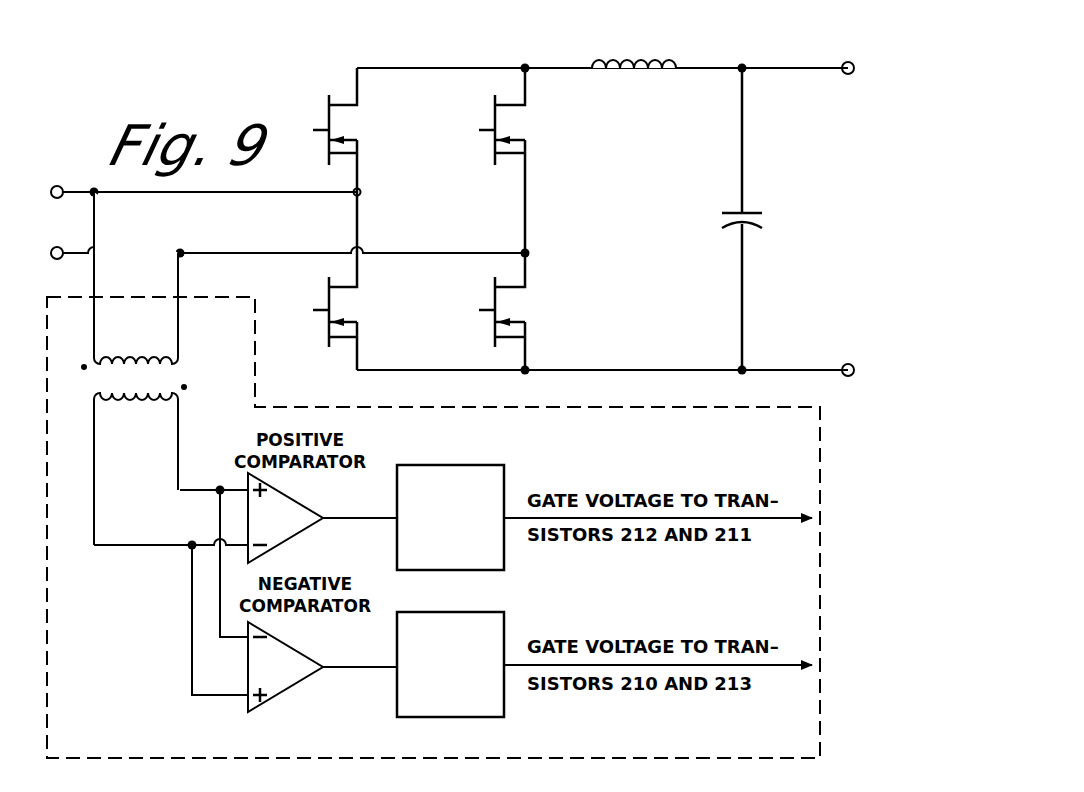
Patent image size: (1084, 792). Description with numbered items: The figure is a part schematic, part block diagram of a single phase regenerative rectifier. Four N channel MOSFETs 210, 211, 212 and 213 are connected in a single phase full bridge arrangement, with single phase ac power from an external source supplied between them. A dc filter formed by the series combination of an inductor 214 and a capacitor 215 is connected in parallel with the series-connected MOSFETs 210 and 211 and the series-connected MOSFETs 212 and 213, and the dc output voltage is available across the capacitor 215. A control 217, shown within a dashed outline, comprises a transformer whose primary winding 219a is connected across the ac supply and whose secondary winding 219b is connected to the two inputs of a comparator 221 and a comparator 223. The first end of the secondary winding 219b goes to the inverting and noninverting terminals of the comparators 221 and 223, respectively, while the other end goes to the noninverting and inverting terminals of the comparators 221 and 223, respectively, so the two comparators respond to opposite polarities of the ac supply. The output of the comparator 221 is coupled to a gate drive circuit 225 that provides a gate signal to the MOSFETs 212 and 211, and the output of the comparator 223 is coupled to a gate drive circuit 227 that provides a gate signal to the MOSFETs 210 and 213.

The N channel MOSFET 210 is at (355, 128).
The N channel MOSFET 211 is at (352, 310).
The N channel MOSFET 212 is at (520, 128).
The N channel MOSFET 213 is at (518, 310).
The inductor 214 is at (650, 76).
The capacitor 215 is at (732, 210).
The control 217 is at (820, 580).
The primary winding 219a is at (158, 356).
The secondary winding 219b is at (133, 410).
The comparator 221 is at (292, 506).
The comparator 223 is at (292, 655).
The gate drive circuit 225 is at (452, 465).
The gate drive circuit 227 is at (452, 612).